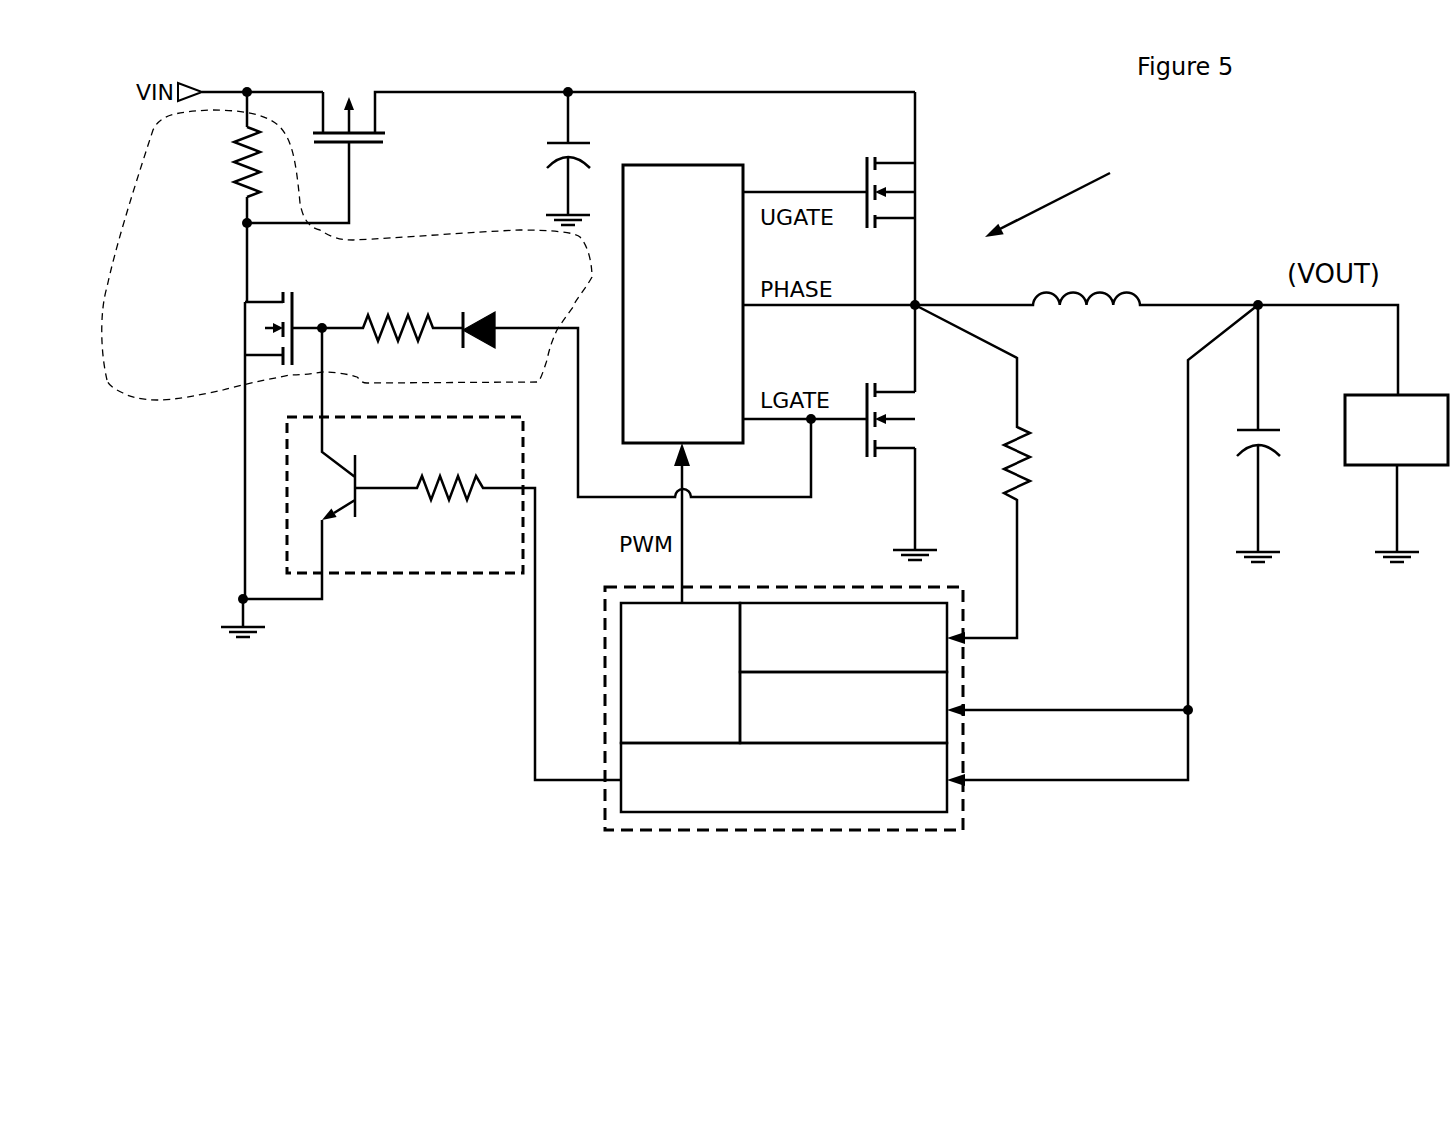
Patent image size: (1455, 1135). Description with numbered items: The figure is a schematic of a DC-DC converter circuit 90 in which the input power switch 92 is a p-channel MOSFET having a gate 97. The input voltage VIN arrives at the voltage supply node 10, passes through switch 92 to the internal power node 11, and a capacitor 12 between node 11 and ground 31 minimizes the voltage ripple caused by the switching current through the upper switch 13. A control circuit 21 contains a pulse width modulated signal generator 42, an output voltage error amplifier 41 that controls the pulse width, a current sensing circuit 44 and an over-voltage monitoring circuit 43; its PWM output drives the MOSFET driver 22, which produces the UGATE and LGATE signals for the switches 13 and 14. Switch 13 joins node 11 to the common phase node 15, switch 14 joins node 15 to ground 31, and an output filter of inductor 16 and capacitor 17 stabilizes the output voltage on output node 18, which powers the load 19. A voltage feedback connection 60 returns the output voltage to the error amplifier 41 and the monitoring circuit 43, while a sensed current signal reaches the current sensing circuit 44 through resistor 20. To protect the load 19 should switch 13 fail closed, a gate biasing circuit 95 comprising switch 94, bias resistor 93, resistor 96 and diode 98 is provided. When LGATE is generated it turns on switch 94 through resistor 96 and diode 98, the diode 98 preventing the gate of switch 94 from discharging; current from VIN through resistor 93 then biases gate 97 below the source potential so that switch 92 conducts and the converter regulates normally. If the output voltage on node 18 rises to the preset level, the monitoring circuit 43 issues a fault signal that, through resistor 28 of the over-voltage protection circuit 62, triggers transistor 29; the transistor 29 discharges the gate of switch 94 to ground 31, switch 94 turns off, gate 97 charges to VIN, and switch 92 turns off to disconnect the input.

The voltage supply node 10 is at (249, 88).
The internal power node 11 is at (573, 88).
The capacitor 12 is at (560, 137).
The switch 13 is at (920, 190).
The switch 14 is at (913, 415).
The common node 15 is at (913, 300).
The inductor 16 is at (1097, 290).
The capacitor 17 is at (1262, 427).
The output node 18 is at (1258, 297).
The load 19 is at (1400, 390).
The resistor 20 is at (1035, 478).
The control circuit 21 is at (718, 582).
The MOSFET driver 22 is at (683, 304).
The resistor 28 is at (437, 473).
The transistor 29 is at (352, 472).
The ground 31 is at (561, 213).
The output voltage error amplifier 41 is at (930, 722).
The pulse width modulated signal generator 42 is at (680, 673).
The over-voltage monitoring circuit 43 is at (933, 798).
The current sensing circuit 44 is at (915, 652).
The voltage feedback connection 60 is at (1188, 588).
The over-voltage protection circuit 62 is at (393, 575).
The circuit 90 is at (1069, 195).
The input power switch 92 is at (353, 96).
The bias resistor 93 is at (220, 148).
The switch 94 is at (232, 327).
The gate biasing circuit 95 is at (173, 373).
The resistor 96 is at (393, 310).
The gate 97 is at (355, 144).
The diode 98 is at (477, 303).